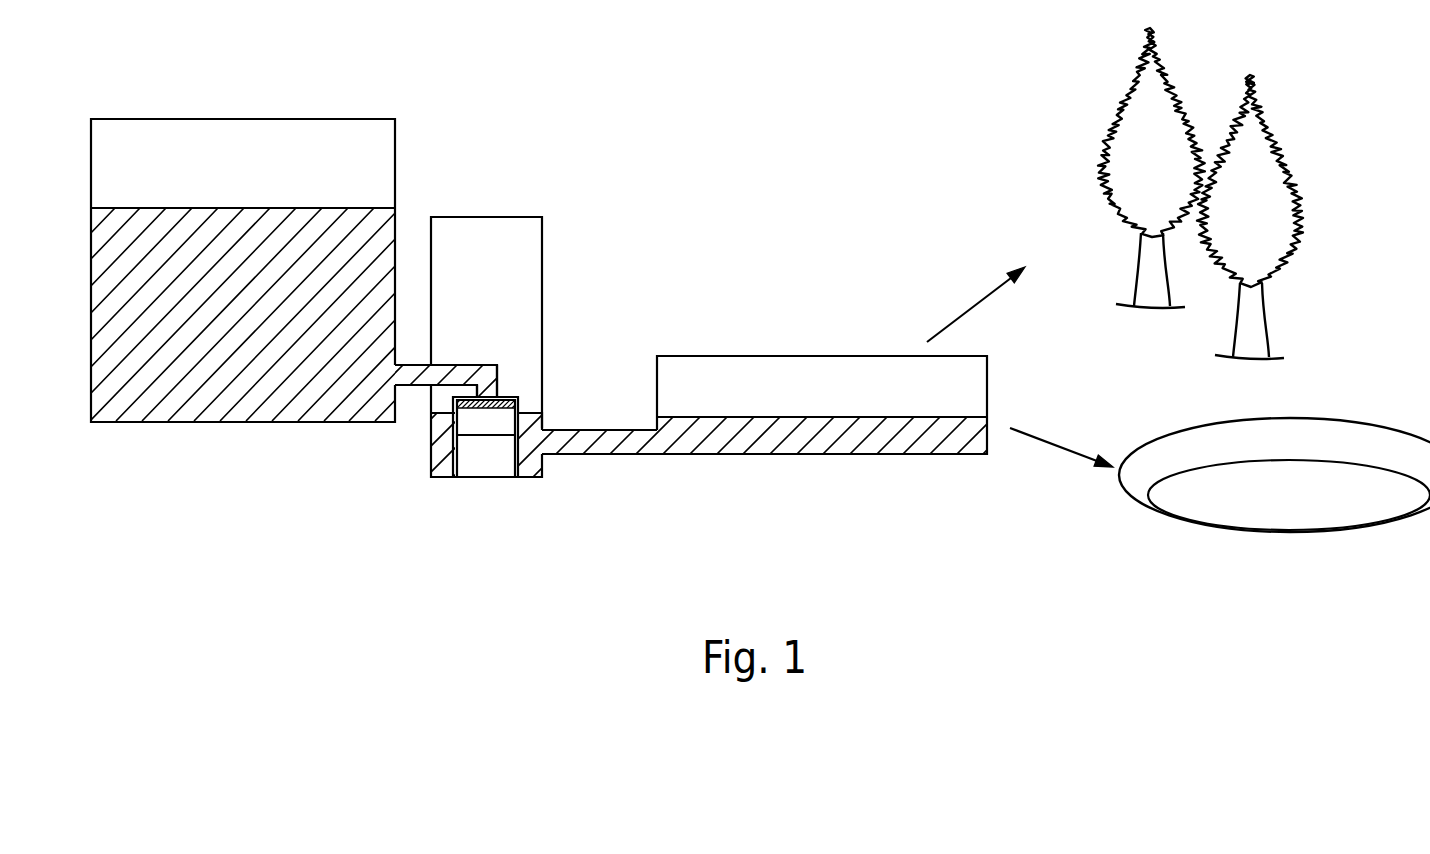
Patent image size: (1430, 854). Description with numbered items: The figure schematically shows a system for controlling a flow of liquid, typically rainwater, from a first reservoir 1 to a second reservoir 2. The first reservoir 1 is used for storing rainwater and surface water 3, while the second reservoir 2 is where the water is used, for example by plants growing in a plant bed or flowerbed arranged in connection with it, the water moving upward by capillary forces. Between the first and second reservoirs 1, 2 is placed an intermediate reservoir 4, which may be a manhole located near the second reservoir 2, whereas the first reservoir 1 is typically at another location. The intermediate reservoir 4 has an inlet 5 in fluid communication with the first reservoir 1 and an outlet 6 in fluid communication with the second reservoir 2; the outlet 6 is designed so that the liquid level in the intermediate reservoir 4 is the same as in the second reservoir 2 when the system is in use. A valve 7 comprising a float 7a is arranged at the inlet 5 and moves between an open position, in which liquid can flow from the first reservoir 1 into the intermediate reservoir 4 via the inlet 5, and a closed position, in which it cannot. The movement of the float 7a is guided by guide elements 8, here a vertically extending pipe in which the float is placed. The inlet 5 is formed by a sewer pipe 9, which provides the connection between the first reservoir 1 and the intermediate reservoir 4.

The first reservoir 1 is at (240, 118).
The second reservoir 2 is at (850, 378).
The rainwater and surface water 3 is at (240, 398).
The intermediate reservoir 4 is at (542, 260).
The inlet 5 is at (483, 391).
The outlet 6 is at (540, 437).
The valve 7 is at (480, 467).
The float 7a is at (468, 420).
The guide elements 8 is at (518, 450).
The sewer pipe 9 is at (406, 376).